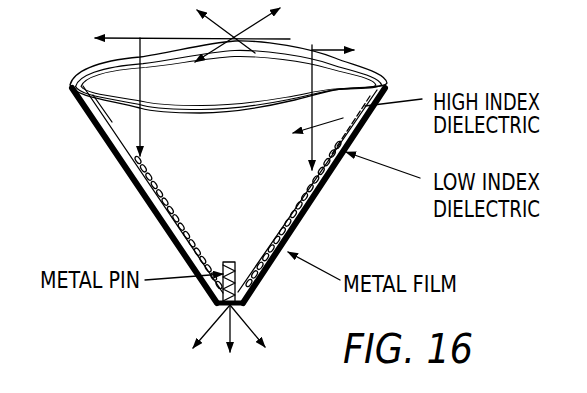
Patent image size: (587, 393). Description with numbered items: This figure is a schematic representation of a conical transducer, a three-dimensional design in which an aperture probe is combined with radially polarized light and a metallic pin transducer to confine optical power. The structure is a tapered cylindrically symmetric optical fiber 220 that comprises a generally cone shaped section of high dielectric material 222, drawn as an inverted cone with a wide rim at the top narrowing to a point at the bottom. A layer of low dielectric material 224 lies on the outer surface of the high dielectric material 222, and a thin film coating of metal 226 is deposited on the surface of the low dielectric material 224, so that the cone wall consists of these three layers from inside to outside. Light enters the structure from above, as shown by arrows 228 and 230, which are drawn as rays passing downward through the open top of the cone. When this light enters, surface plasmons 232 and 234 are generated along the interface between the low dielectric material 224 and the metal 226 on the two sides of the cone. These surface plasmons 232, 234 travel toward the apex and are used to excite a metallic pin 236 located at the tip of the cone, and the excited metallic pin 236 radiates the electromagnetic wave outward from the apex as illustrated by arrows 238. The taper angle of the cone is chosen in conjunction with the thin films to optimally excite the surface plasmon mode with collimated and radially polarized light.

The tapered cylindrically symmetric optical fiber 220 is at (280, 67).
The high dielectric material 222 is at (347, 82).
The low dielectric material 224 is at (360, 136).
The thin film coating of metal 226 is at (327, 177).
The arrows 228 is at (140, 80).
The arrows 230 is at (320, 73).
The surface plasmons 232 is at (165, 229).
The surface plasmons 234 is at (302, 228).
The metallic pin 236 is at (222, 298).
The arrows 238 is at (233, 337).